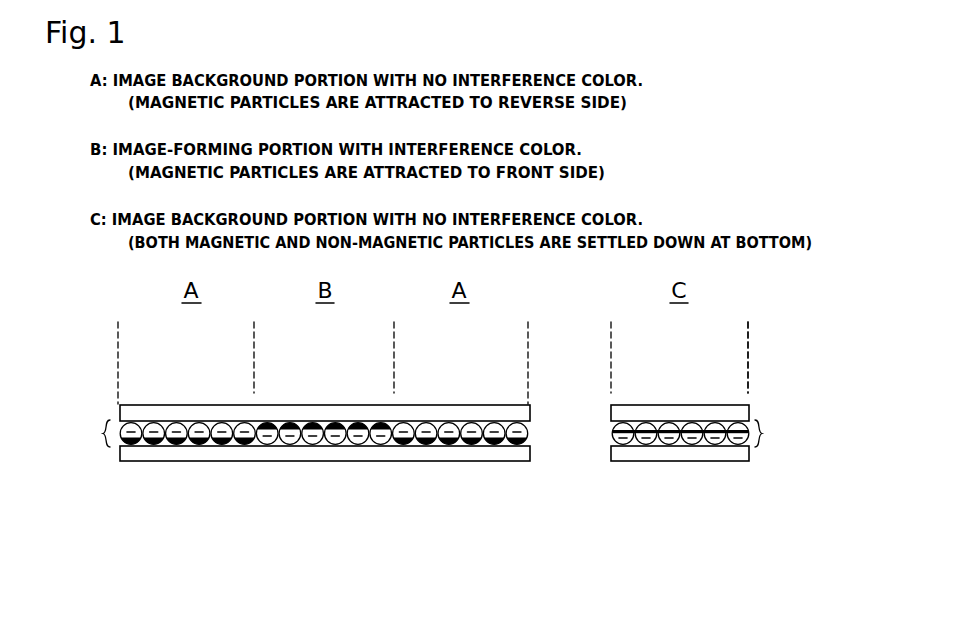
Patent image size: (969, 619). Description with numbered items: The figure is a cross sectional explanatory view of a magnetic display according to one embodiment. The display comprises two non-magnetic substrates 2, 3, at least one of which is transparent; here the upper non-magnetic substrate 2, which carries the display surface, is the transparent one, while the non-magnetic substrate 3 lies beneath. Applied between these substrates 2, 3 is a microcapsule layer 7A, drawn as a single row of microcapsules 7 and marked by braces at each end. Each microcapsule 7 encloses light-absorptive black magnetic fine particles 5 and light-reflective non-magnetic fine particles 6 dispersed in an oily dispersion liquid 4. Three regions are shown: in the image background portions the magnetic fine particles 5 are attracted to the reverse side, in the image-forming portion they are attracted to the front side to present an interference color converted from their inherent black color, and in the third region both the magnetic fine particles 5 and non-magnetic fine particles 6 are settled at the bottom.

The non-magnetic substrate 2 is at (609, 410).
The non-magnetic substrate 3 is at (453, 449).
The oily dispersion liquid 4 is at (739, 420).
The light-absorptive black magnetic fine particles 5 is at (383, 426).
The light-reflective non-magnetic fine particles 6 is at (128, 427).
The microcapsule 7 is at (242, 426).
The microcapsule layer 7A is at (103, 434).